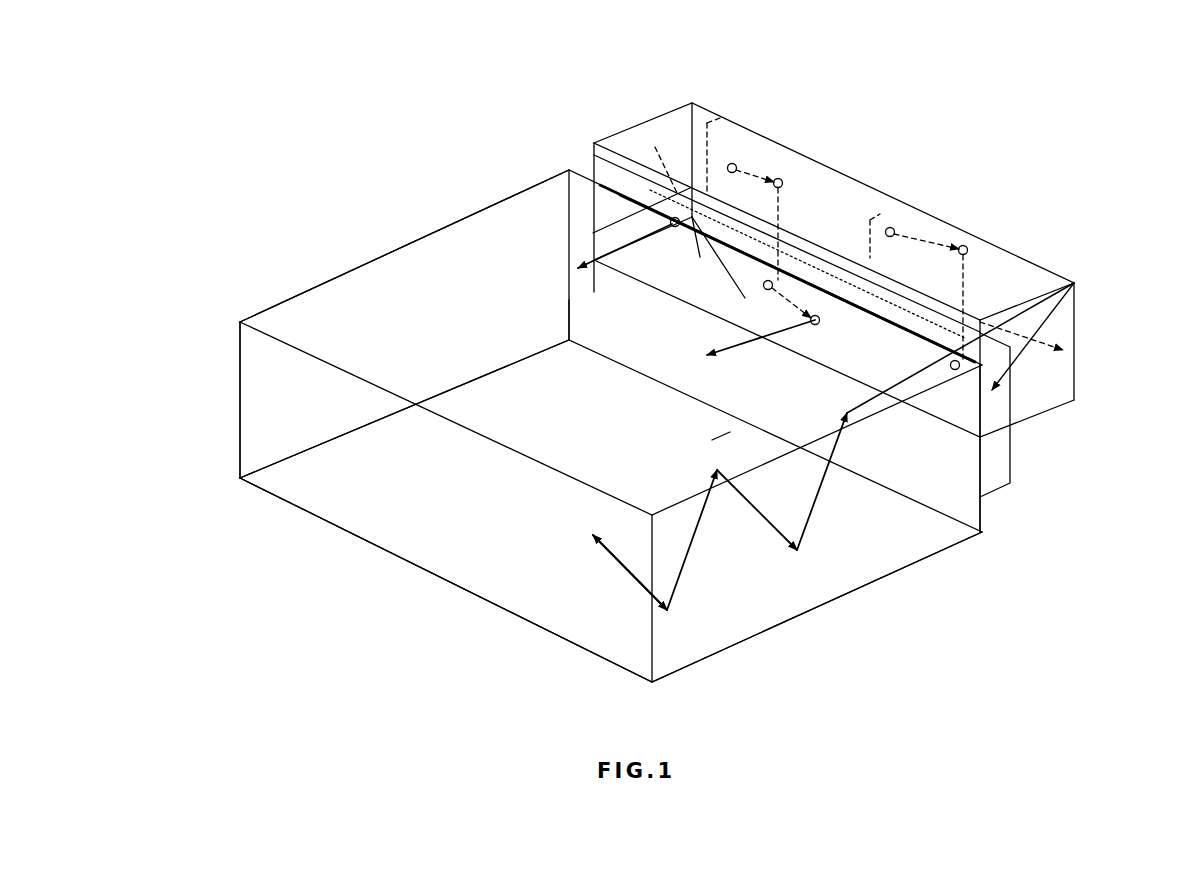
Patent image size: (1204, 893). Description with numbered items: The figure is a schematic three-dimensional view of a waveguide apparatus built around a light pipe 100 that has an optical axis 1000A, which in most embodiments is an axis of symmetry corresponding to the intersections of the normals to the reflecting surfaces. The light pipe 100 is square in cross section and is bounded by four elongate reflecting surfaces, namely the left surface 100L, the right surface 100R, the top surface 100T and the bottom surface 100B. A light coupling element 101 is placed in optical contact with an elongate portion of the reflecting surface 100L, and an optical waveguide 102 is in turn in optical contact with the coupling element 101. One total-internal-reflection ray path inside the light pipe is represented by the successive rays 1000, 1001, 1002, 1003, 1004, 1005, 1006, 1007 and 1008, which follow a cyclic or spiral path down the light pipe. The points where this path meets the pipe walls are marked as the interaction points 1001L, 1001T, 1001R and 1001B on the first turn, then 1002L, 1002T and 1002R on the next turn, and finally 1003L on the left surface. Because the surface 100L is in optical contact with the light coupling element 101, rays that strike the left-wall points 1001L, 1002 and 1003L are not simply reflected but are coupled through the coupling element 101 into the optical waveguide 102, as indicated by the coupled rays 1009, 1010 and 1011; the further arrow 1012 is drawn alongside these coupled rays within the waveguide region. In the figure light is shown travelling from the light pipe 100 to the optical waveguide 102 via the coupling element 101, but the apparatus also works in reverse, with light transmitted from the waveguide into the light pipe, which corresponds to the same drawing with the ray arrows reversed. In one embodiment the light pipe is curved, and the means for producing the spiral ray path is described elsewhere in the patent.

The light pipe 100 is at (1078, 338).
The top reflecting surface of the light pipe 100T is at (662, 120).
The bottom reflecting surface of the light pipe 100B is at (603, 218).
The left reflecting surface of the light pipe 100L is at (655, 222).
The right reflecting surface of the light pipe 100R is at (688, 103).
The light coupling element 101 is at (1013, 470).
The optical waveguide 102 is at (650, 684).
The ray 1000 is at (660, 145).
The optical axis 1000A is at (708, 178).
The ray 1001 is at (718, 185).
The ray interaction point on the top surface 1001T is at (720, 183).
The ray interaction point on the left surface 1001L is at (566, 312).
The ray interaction point on the right surface 1001R is at (700, 257).
The ray interaction point on the bottom surface 1001B is at (745, 298).
The ray 1002 is at (745, 180).
The ray interaction point on the right surface 1002R is at (872, 255).
The ray interaction point on the top surface 1002T is at (975, 245).
The ray interaction point on the left surface 1002L is at (720, 436).
The ray 1003 is at (760, 250).
The ray interaction point on the left surface 1003L is at (985, 320).
The ray 1004 is at (800, 275).
The ray 1005 is at (893, 222).
The ray 1006 is at (967, 240).
The ray 1007 is at (968, 305).
The ray 1008 is at (1045, 325).
The coupled ray 1009 is at (590, 282).
The coupled ray 1010 is at (952, 525).
The coupled ray 1011 is at (988, 500).
The fourth light beam 1012 is at (672, 598).